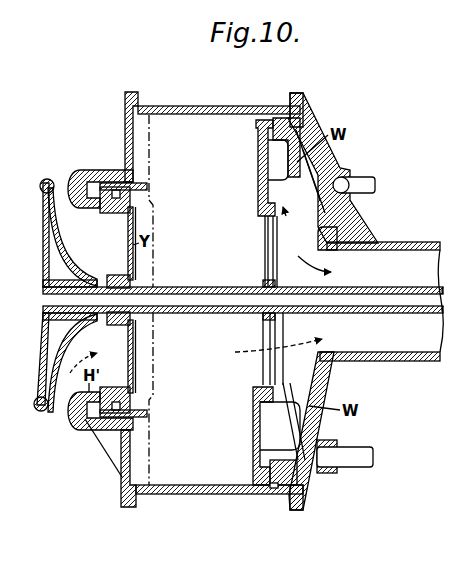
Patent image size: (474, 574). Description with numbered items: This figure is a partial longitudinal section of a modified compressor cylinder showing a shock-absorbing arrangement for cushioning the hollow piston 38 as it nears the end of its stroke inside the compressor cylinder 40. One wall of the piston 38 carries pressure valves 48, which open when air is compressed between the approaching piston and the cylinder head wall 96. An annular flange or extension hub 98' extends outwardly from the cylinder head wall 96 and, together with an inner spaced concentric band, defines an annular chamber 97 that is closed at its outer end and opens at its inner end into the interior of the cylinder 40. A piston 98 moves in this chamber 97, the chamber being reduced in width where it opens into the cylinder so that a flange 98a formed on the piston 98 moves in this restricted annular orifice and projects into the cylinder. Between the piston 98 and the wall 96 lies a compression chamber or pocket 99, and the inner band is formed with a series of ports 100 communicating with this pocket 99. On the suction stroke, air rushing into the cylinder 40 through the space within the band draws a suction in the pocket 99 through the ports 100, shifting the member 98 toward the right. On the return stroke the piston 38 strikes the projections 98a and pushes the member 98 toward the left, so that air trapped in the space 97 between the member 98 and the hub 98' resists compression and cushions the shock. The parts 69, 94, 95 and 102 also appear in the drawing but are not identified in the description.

The piston 38 is at (253, 473).
The compressor cylinder 40 is at (270, 490).
The pressure valves 48 is at (274, 248).
The shaft 69 is at (205, 289).
The casing bottom wall 94 is at (136, 463).
The sleeve 95 is at (265, 369).
The cylinder head wall 96 is at (122, 477).
The annular chamber 97 is at (88, 414).
The piston 98 is at (91, 311).
The annular flange 98' is at (98, 137).
The flange 98a is at (140, 413).
The compression chamber 99 is at (128, 184).
The ports 100 is at (114, 205).
The cover disk 102 is at (44, 240).